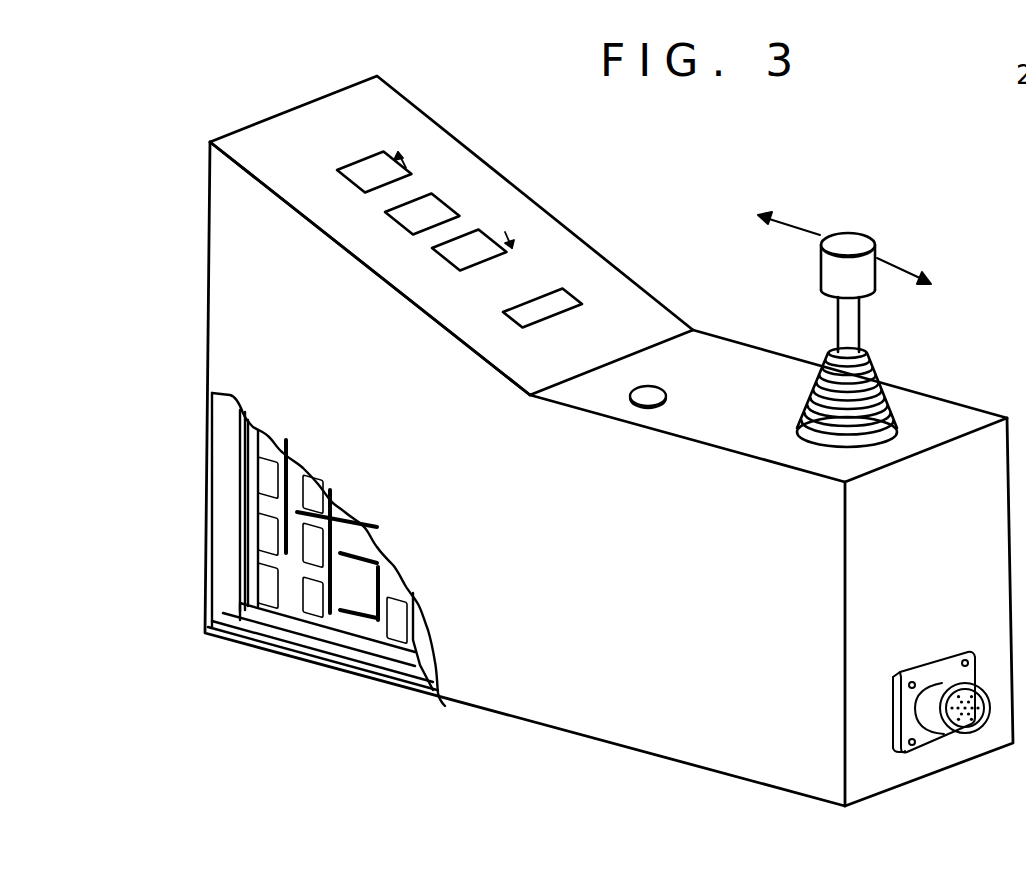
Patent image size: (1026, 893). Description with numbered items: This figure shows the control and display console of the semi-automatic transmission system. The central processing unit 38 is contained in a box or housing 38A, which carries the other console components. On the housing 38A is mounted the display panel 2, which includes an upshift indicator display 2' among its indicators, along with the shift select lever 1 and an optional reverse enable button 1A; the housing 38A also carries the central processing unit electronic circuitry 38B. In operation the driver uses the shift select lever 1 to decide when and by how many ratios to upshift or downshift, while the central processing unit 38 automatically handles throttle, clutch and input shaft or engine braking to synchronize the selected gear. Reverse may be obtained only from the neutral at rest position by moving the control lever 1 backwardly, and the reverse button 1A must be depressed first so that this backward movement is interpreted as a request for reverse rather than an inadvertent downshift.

The shift select lever 1 is at (860, 232).
The reverse enable button 1A is at (662, 410).
The display panel 2 is at (459, 227).
The central processing unit 38 is at (215, 470).
The housing 38A is at (568, 673).
The central processing unit electronic circuitry 38B is at (268, 529).
The upshift indicator display 2' is at (1013, 261).